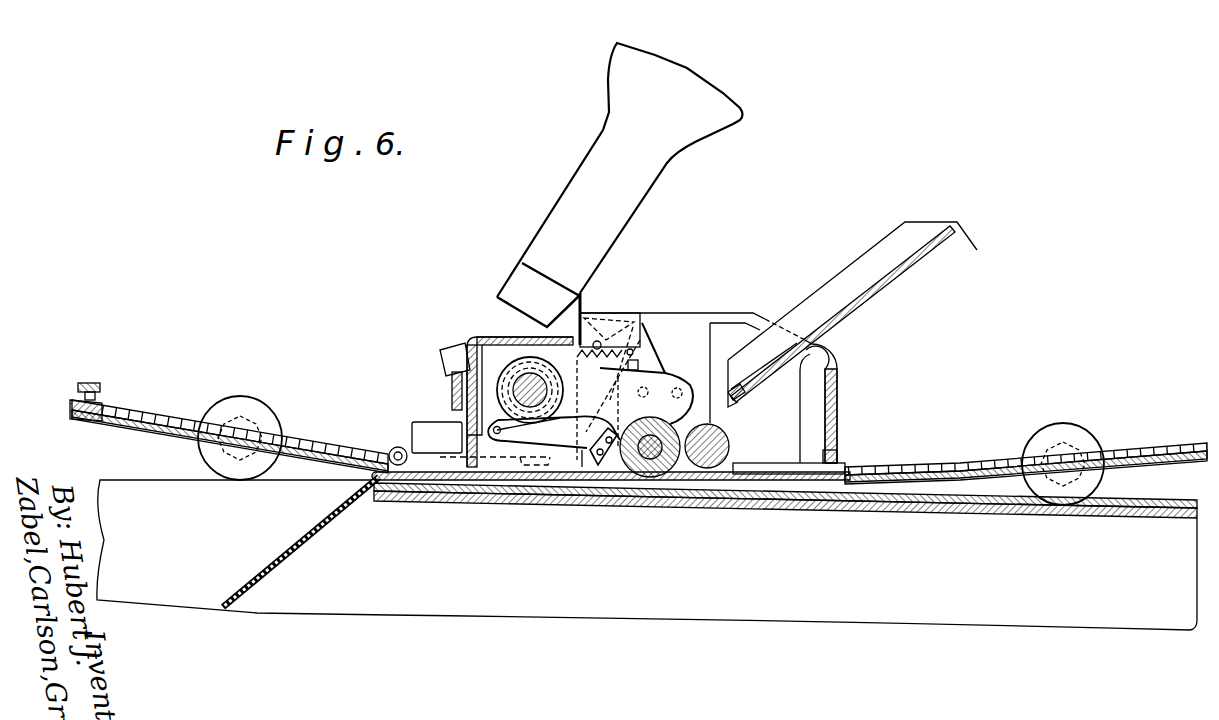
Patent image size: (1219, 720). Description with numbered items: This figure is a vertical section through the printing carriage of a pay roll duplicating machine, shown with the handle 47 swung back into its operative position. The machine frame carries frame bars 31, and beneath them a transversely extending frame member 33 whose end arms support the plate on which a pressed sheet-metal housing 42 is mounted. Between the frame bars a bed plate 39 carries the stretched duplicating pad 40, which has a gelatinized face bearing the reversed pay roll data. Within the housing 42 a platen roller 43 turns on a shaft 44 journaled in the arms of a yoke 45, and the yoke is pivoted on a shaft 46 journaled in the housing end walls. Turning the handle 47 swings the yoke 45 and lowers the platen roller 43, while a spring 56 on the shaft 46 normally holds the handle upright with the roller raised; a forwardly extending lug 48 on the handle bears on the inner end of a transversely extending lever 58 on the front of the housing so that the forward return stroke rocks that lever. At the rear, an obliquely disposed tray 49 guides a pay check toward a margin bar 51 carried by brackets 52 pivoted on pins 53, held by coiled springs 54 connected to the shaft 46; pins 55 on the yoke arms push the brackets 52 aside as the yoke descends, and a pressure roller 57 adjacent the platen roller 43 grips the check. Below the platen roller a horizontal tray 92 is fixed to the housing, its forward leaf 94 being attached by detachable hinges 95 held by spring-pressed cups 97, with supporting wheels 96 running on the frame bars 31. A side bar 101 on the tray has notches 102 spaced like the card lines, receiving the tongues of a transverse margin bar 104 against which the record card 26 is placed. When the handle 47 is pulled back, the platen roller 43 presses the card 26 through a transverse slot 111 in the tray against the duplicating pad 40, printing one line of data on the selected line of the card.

The individual record card 26 is at (918, 466).
The frame bar 31 is at (140, 462).
The transversely extending frame member 33 is at (716, 491).
The bed plate 39 is at (803, 505).
The duplicating pad 40 is at (320, 528).
The housing 42 is at (838, 385).
The platen roller 43 is at (626, 486).
The shaft 44 is at (663, 428).
The yoke 45 is at (641, 392).
The shaft 46 is at (530, 400).
The handle 47 is at (595, 182).
The forwardly extending lug 48 is at (455, 345).
The tray 49 is at (897, 277).
The margin bar 51 is at (588, 447).
The bracket 52 is at (657, 330).
The pin 53 is at (629, 378).
The coiled spring 54 is at (592, 336).
The pin 55 is at (678, 390).
The spring 56 is at (452, 389).
The pressure roller 57 is at (729, 440).
The transversely extending lever 58 is at (447, 378).
The tray 92 is at (1138, 462).
The leaf 94 is at (158, 431).
The hinge 95 is at (395, 452).
The supporting wheel 96 is at (237, 404).
The cup 97 is at (423, 428).
The side bar 101 is at (165, 416).
The notch 102 is at (300, 438).
The transverse margin bar 104 is at (72, 405).
The transverse slot 111 is at (586, 496).